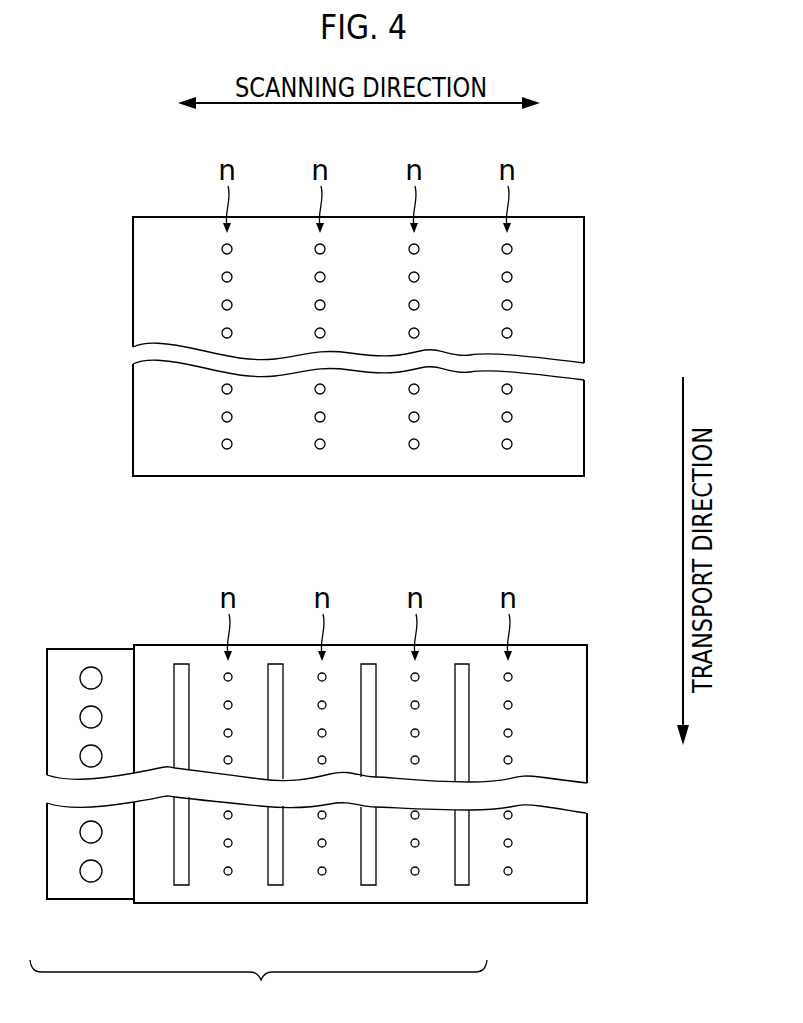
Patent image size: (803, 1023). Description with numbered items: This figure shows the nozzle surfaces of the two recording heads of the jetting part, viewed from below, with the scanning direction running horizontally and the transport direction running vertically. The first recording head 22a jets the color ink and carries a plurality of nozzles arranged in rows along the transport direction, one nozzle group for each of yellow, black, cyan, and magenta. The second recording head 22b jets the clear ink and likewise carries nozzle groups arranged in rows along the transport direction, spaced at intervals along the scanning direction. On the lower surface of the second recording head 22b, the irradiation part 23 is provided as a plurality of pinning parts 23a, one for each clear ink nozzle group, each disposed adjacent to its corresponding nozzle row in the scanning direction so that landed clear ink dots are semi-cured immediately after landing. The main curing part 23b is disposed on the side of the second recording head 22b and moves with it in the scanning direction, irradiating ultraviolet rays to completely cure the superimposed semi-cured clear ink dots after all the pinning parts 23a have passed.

The first recording head 22a is at (562, 285).
The second recording head 22b is at (566, 714).
The irradiation part 23 is at (258, 984).
The pinning part 23a is at (183, 875).
The main curing part 23b is at (70, 892).